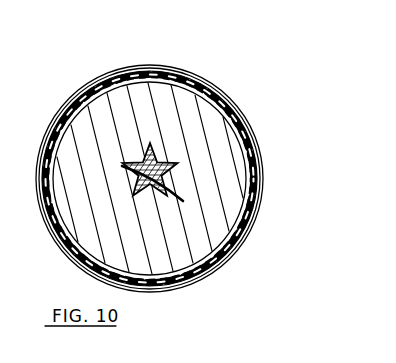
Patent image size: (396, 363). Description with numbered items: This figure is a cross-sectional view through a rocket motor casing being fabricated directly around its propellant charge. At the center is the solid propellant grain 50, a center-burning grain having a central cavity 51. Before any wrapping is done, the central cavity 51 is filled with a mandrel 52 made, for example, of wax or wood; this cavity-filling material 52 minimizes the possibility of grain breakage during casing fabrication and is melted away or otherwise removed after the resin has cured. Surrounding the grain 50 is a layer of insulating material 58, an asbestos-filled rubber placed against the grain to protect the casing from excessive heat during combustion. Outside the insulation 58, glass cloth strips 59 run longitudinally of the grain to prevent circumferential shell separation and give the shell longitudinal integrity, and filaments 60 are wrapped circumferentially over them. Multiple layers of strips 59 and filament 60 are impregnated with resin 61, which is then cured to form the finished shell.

The solid propellant grain 50 is at (200, 138).
The central cavity 51 is at (152, 152).
The mandrel 52 is at (165, 187).
The insulating material 58 is at (246, 224).
The glass cloth strips 59 is at (247, 181).
The filaments 60 is at (220, 101).
The resin 61 is at (111, 80).